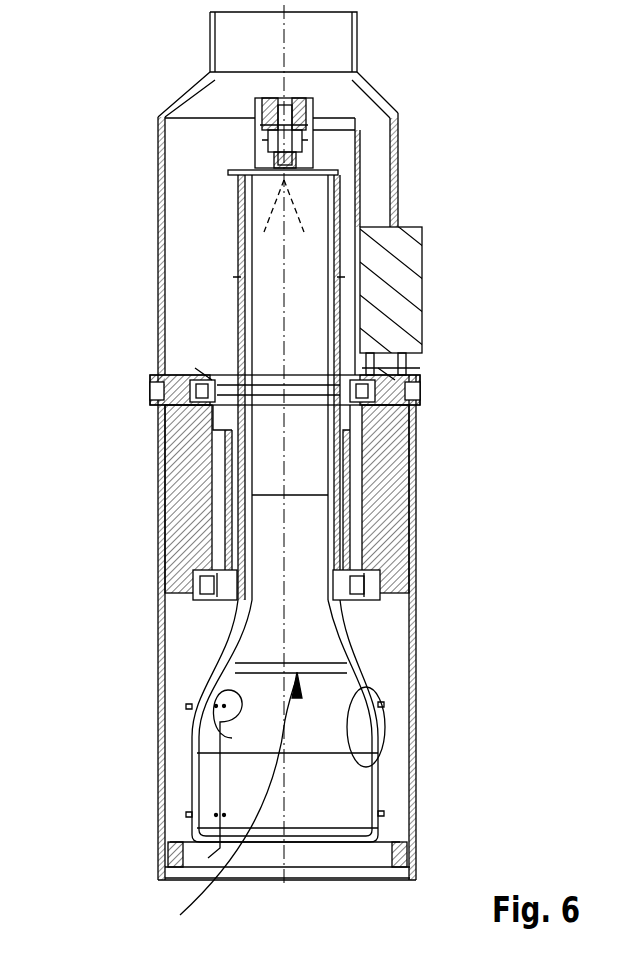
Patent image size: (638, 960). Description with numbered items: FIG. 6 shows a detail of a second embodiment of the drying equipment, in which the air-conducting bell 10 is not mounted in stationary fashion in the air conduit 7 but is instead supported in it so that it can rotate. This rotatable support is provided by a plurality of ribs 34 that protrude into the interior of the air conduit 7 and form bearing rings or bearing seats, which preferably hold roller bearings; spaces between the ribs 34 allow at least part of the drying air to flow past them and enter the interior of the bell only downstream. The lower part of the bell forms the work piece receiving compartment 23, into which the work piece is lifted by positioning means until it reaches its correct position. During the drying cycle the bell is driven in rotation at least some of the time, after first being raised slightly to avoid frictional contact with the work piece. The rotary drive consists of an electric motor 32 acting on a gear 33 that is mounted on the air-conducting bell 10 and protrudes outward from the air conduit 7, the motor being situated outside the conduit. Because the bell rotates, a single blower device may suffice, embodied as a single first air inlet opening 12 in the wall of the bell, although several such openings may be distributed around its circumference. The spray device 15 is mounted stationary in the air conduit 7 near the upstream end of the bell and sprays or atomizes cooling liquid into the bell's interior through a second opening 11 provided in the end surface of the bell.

The air conduit 7 is at (396, 172).
The air-conducting bell 10 is at (385, 768).
The second opening 11 is at (275, 177).
The first air inlet opening 12 is at (232, 738).
The spray device 15 is at (302, 112).
The work piece receiving compartment 23 is at (212, 810).
The electric motor 32 is at (406, 330).
The gear 33 is at (200, 377).
The ribs 34 is at (175, 470).